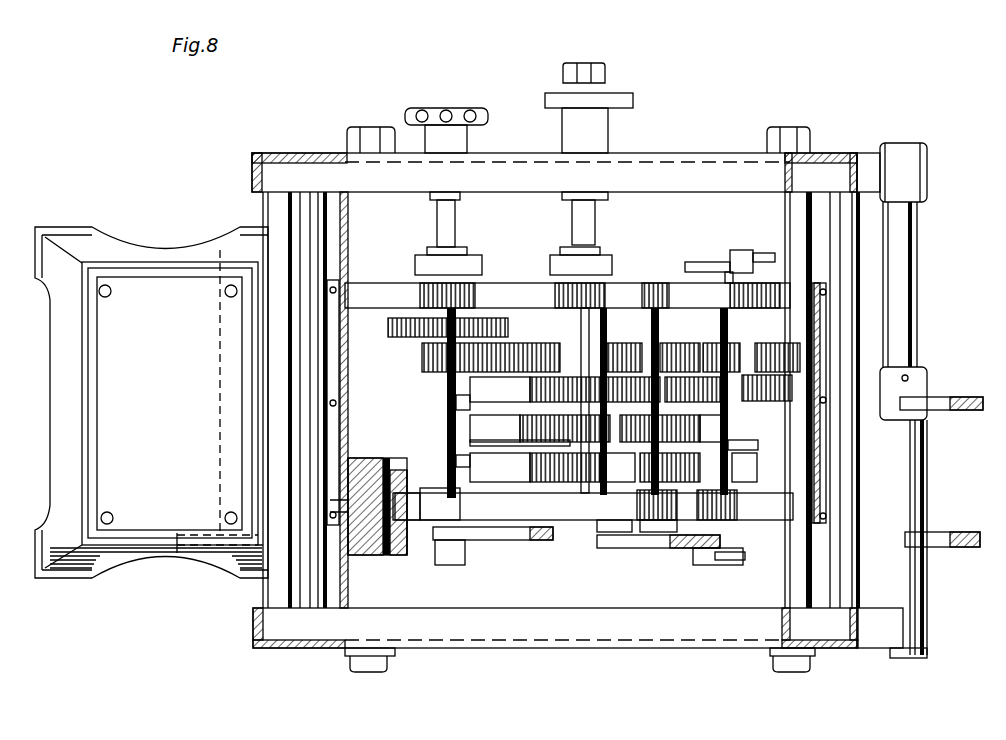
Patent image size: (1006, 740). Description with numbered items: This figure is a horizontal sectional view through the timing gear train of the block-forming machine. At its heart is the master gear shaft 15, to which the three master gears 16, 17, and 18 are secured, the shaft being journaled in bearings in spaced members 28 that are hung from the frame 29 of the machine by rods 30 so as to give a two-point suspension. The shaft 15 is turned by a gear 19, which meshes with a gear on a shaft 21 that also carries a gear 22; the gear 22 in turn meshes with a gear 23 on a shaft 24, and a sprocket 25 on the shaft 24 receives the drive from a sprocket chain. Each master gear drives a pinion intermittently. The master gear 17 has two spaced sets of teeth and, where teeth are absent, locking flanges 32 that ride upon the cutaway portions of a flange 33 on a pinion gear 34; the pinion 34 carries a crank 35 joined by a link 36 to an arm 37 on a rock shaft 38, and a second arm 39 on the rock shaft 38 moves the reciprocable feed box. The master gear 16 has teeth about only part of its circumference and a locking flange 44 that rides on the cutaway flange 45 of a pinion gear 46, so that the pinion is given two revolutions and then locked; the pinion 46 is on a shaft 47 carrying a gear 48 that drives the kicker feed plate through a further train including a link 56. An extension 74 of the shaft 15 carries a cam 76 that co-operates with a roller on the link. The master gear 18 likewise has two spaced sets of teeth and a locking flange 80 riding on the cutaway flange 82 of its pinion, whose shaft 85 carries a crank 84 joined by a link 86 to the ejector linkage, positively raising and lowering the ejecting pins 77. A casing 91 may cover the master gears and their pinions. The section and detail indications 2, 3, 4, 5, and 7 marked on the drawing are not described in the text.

The section line 2 is at (448, 485).
The section line 3 is at (450, 443).
The section line 4 is at (450, 405).
The section line 5 is at (425, 373).
The section line 7 is at (586, 63).
The master gear shaft 15 is at (582, 338).
The master gear 16 is at (595, 389).
The master gear 17 is at (585, 428).
The master gear 18 is at (585, 467).
The gear 19 is at (612, 348).
The shaft 21 is at (510, 328).
The gear 22 is at (422, 352).
The gear 23 is at (455, 320).
The shaft 24 is at (456, 220).
The sprocket 25 is at (465, 110).
The spaced members 28 is at (616, 300).
The frame 29 is at (688, 158).
The rods 30 is at (358, 127).
The locking flanges 32 is at (440, 460).
The flange 33 is at (632, 466).
The pinion gear 34 is at (738, 401).
The crank 35 is at (668, 548).
The link 36 is at (730, 565).
The arm 37 is at (960, 548).
The rock shaft 38 is at (918, 358).
The arm 39 is at (958, 410).
The locking flange 44 is at (448, 396).
The flange 45 is at (706, 440).
The pinion gear 46 is at (755, 395).
The shaft 47 is at (750, 426).
The gear 48 is at (766, 340).
The link 56 is at (758, 256).
The extension 74 is at (595, 225).
The cam 76 is at (633, 100).
The ejecting pins 77 is at (158, 305).
The locking flange 80 is at (461, 506).
The flange 82 is at (440, 504).
The crank 84 is at (530, 540).
The shaft 85 is at (480, 295).
The link 86 is at (418, 555).
The casing 91 is at (338, 433).